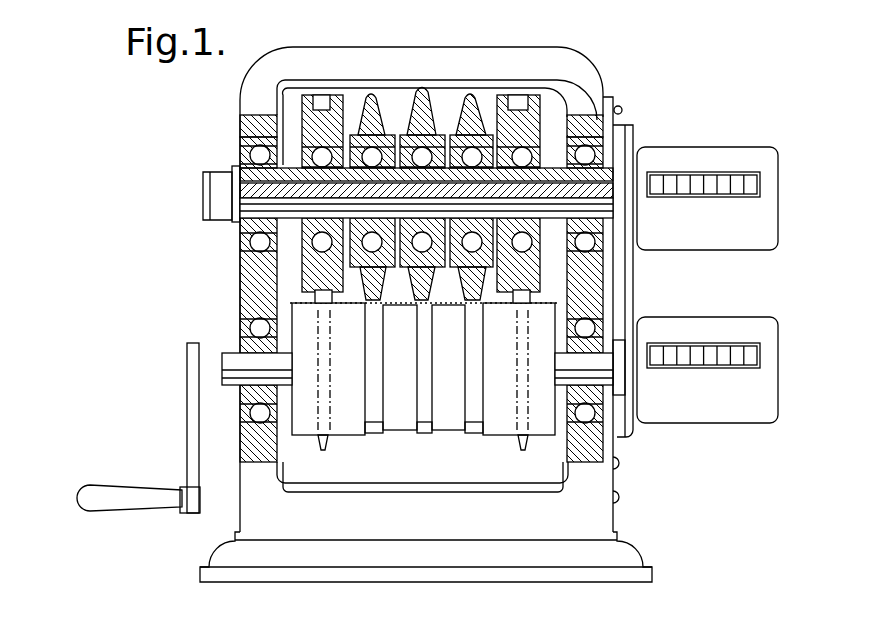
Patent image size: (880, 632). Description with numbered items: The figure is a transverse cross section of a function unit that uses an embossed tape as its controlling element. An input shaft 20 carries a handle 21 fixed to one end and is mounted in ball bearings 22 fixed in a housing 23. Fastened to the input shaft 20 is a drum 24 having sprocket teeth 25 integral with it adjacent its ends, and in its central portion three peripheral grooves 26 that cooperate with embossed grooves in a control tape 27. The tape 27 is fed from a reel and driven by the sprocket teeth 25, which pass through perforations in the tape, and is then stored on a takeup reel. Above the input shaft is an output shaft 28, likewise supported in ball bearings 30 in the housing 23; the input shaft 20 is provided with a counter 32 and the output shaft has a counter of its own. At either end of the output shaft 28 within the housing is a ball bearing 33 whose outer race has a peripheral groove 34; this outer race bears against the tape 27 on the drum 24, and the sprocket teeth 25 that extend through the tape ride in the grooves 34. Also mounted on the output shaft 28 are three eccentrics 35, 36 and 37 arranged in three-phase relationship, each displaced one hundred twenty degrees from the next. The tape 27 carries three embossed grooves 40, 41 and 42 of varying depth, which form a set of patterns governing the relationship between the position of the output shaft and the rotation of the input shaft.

The input shaft 20 is at (242, 365).
The handle 21 is at (135, 498).
The ball bearings 22 is at (242, 317).
The housing 23 is at (588, 88).
The drum 24 is at (415, 411).
The sprocket teeth 25 is at (322, 443).
The peripheral grooves 26 is at (460, 428).
The control tape 27 is at (412, 303).
The output shaft 28 is at (247, 206).
The ball bearings 30 is at (240, 148).
The counter 32 is at (708, 328).
The ball bearing 33 is at (303, 130).
The peripheral groove 34 is at (315, 108).
The eccentric 35 is at (382, 128).
The eccentric 36 is at (443, 107).
The eccentric 37 is at (482, 110).
The embossed groove 40 is at (373, 310).
The embossed groove 41 is at (415, 305).
The embossed groove 42 is at (470, 307).